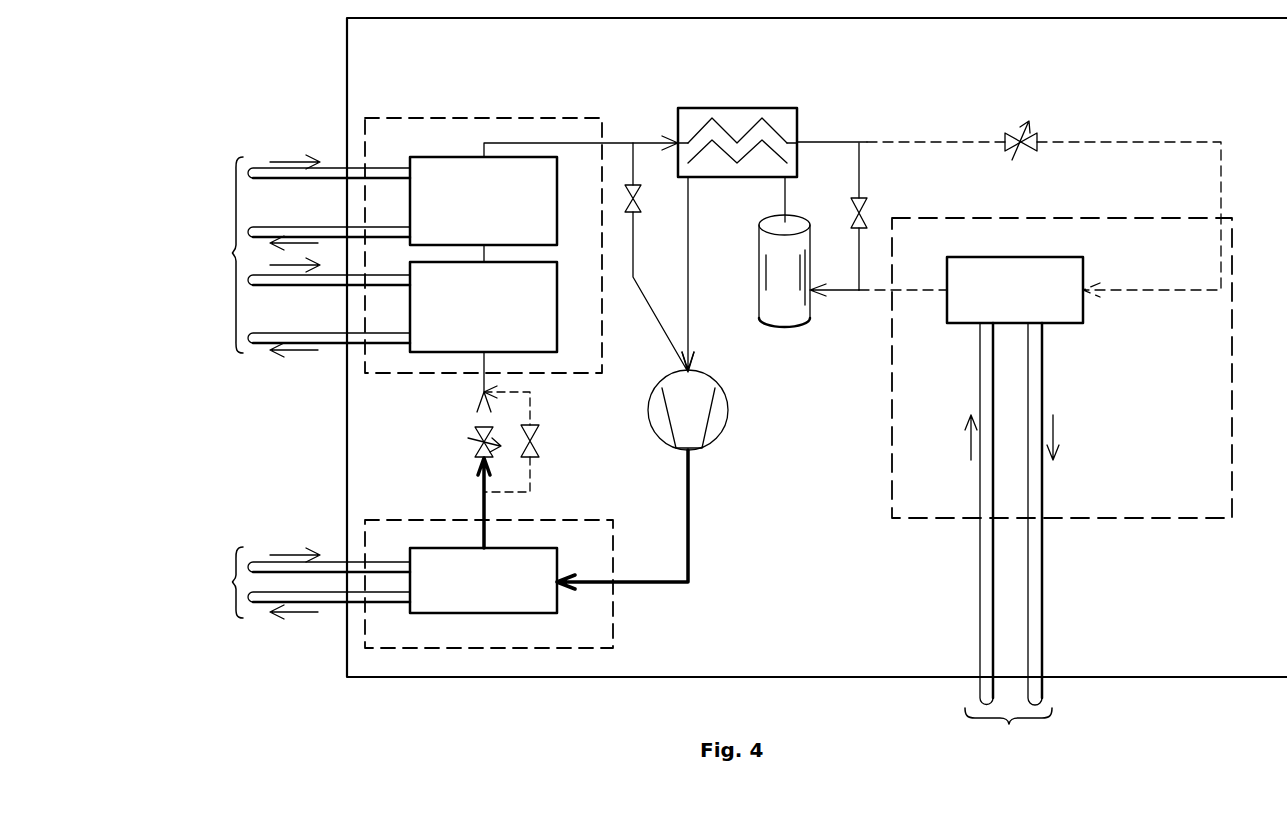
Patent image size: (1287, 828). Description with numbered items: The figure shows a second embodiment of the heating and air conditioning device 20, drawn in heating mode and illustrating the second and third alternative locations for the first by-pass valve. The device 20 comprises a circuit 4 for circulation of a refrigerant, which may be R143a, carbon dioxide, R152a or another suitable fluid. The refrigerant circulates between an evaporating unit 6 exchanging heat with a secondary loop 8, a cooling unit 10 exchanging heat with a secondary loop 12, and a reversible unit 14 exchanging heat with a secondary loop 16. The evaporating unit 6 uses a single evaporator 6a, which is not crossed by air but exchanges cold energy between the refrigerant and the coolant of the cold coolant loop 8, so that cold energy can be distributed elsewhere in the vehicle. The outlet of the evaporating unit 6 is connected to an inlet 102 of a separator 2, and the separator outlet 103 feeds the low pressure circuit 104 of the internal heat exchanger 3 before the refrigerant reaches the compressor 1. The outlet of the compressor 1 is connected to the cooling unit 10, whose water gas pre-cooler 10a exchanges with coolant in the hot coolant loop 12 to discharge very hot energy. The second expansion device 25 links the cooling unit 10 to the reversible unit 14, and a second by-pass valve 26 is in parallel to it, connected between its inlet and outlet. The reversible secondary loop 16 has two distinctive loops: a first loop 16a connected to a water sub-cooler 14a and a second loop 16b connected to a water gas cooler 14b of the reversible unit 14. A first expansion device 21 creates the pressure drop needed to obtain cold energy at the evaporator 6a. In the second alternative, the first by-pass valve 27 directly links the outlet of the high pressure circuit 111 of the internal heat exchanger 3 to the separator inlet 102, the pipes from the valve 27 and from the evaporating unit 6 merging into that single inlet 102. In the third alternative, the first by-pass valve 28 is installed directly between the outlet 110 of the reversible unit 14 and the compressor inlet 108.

The compressor 1 is at (722, 425).
The separator 2 is at (768, 288).
The internal heat exchanger 3 is at (737, 144).
The circuit 4 is at (1009, 175).
The evaporating unit 6 is at (1045, 484).
The evaporator 6a is at (1060, 325).
The secondary loop 8 is at (1012, 537).
The cooling unit 10 is at (616, 614).
The water gas pre-cooler 10a is at (530, 588).
The secondary loop 12 is at (306, 583).
The reversible unit 14 is at (502, 116).
The water sub-cooler 14a is at (458, 166).
The water gas cooler 14b is at (437, 348).
The secondary loop 16 is at (305, 253).
The first loop 16a is at (326, 168).
The second loop 16b is at (322, 392).
The heating and air conditioning device 20 is at (817, 347).
The first expansion device 21 is at (1010, 130).
The second expansion device 25 is at (478, 447).
The second by-pass valve 26 is at (540, 452).
The first by-pass valve 27 is at (867, 205).
The first by-pass valve 28 is at (641, 200).
The separator inlet 102 is at (792, 297).
The separator outlet 103 is at (800, 224).
The low pressure circuit 104 is at (713, 163).
The compressor inlet 108 is at (690, 378).
The outlet of the reversible unit 110 is at (600, 143).
The high pressure circuit 111 is at (693, 128).